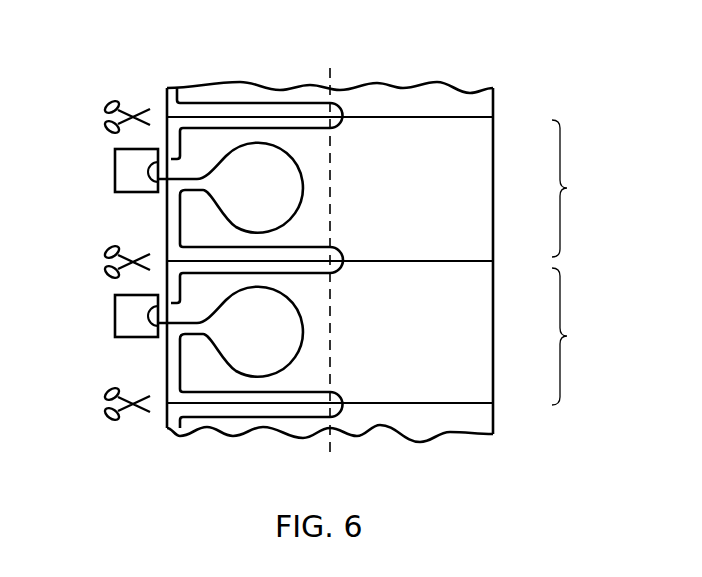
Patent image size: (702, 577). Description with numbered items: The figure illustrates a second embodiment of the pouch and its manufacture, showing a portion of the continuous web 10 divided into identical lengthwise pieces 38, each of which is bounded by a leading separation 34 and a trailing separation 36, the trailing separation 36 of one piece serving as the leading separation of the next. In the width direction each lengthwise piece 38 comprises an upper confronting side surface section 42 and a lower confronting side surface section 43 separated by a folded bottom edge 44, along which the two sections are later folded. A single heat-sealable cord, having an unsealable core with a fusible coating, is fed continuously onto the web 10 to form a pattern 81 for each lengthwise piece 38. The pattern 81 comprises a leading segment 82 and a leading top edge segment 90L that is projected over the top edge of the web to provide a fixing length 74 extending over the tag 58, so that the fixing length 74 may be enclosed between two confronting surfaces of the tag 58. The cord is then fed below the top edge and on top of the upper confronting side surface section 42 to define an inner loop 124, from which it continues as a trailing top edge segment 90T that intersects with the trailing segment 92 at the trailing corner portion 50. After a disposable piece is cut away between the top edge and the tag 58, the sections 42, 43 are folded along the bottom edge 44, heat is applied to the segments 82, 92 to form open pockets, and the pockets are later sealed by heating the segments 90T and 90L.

The web 10 is at (229, 77).
The leading separation 34 is at (493, 117).
The trailing separation 36 is at (493, 262).
The lengthwise piece 38 is at (575, 262).
The upper confronting side surface section 42 is at (283, 440).
The lower confronting side surface section 43 is at (452, 444).
The folded bottom edge 44 is at (328, 450).
The trailing corner portion 50 is at (168, 402).
The tag 58 is at (120, 170).
The fixing length 74 is at (147, 174).
The pattern 81 is at (330, 365).
The leading segment 82 is at (209, 128).
The leading top edge segment 90L is at (177, 141).
The trailing top edge segment 90T is at (180, 223).
The trailing segment 92 is at (293, 102).
The inner loop 124 is at (233, 380).